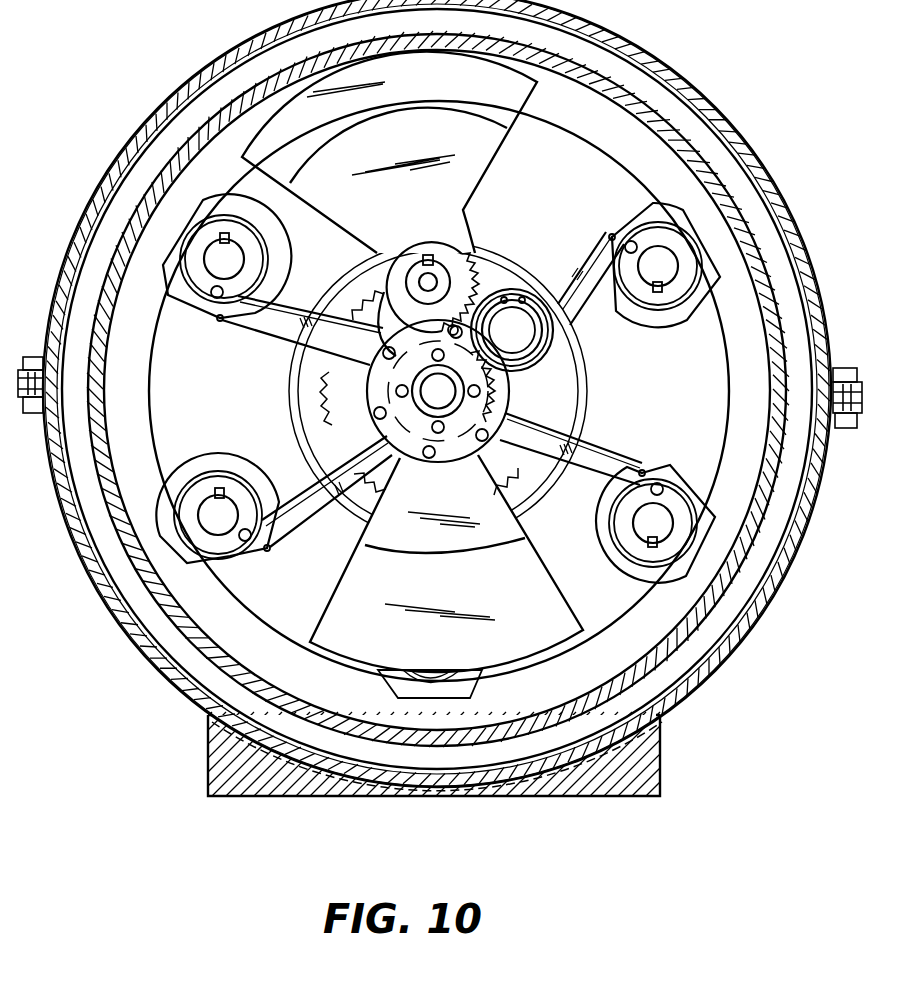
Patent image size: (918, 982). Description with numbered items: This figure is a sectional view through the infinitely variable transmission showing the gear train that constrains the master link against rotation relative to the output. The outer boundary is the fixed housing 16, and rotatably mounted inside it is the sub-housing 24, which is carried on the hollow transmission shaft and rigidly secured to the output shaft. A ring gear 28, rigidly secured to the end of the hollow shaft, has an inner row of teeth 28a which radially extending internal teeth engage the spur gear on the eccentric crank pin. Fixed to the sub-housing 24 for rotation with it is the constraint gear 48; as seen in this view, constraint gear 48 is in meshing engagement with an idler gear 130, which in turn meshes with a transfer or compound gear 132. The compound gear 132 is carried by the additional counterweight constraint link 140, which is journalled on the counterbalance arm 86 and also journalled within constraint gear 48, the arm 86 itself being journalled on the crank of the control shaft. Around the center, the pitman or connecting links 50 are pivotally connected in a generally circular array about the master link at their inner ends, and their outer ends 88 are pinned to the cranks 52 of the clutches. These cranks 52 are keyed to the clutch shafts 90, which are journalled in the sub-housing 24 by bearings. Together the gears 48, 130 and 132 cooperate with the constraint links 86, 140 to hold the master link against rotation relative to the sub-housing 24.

The fixed housing 16 is at (700, 88).
The sub-housing 24 is at (262, 640).
The ring gear 28 is at (322, 404).
The inner row of teeth 28a is at (303, 443).
The constraint gear 48 is at (506, 390).
The pitman or connecting links 50 is at (288, 322).
The cranks 52 is at (216, 316).
The counterbalance arm 86 is at (487, 157).
The outer ends 88 is at (262, 246).
The clutch shafts 90 is at (212, 259).
The idler gear 130 is at (524, 291).
The transfer or compound gear 132 is at (480, 252).
The counterweight constraint link 140 is at (525, 553).